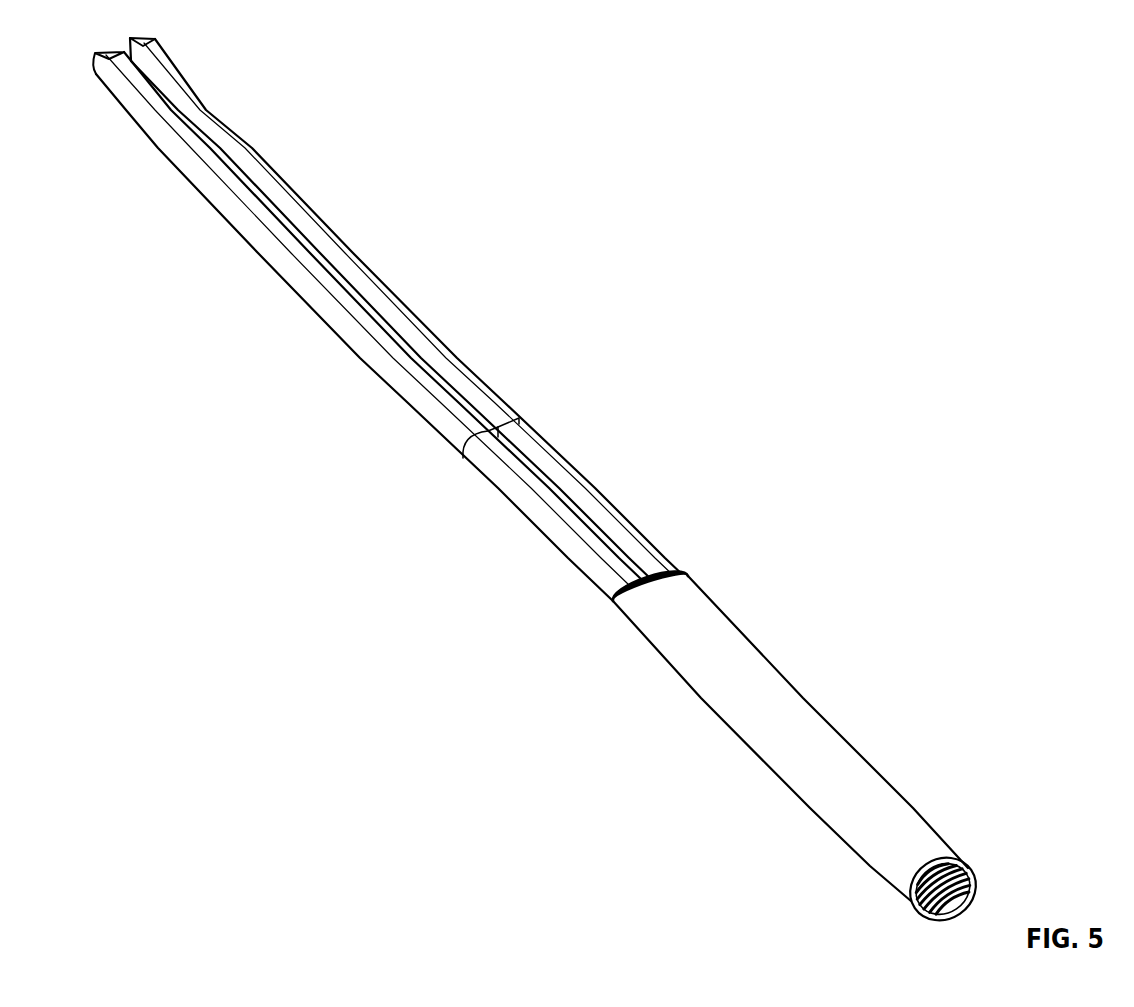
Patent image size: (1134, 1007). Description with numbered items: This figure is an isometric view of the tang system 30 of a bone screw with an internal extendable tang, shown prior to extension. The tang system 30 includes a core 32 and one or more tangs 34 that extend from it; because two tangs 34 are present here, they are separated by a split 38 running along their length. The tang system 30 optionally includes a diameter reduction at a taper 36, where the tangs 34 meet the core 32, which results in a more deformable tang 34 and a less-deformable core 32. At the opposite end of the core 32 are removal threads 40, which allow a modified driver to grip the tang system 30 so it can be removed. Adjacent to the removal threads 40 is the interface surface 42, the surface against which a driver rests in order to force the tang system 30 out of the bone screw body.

The tang system 30 is at (555, 496).
The core 32 is at (815, 765).
The tang 34 is at (263, 183).
The taper 36 is at (641, 558).
The split 38 is at (421, 365).
The removal threads 40 is at (951, 855).
The interface surface 42 is at (921, 906).